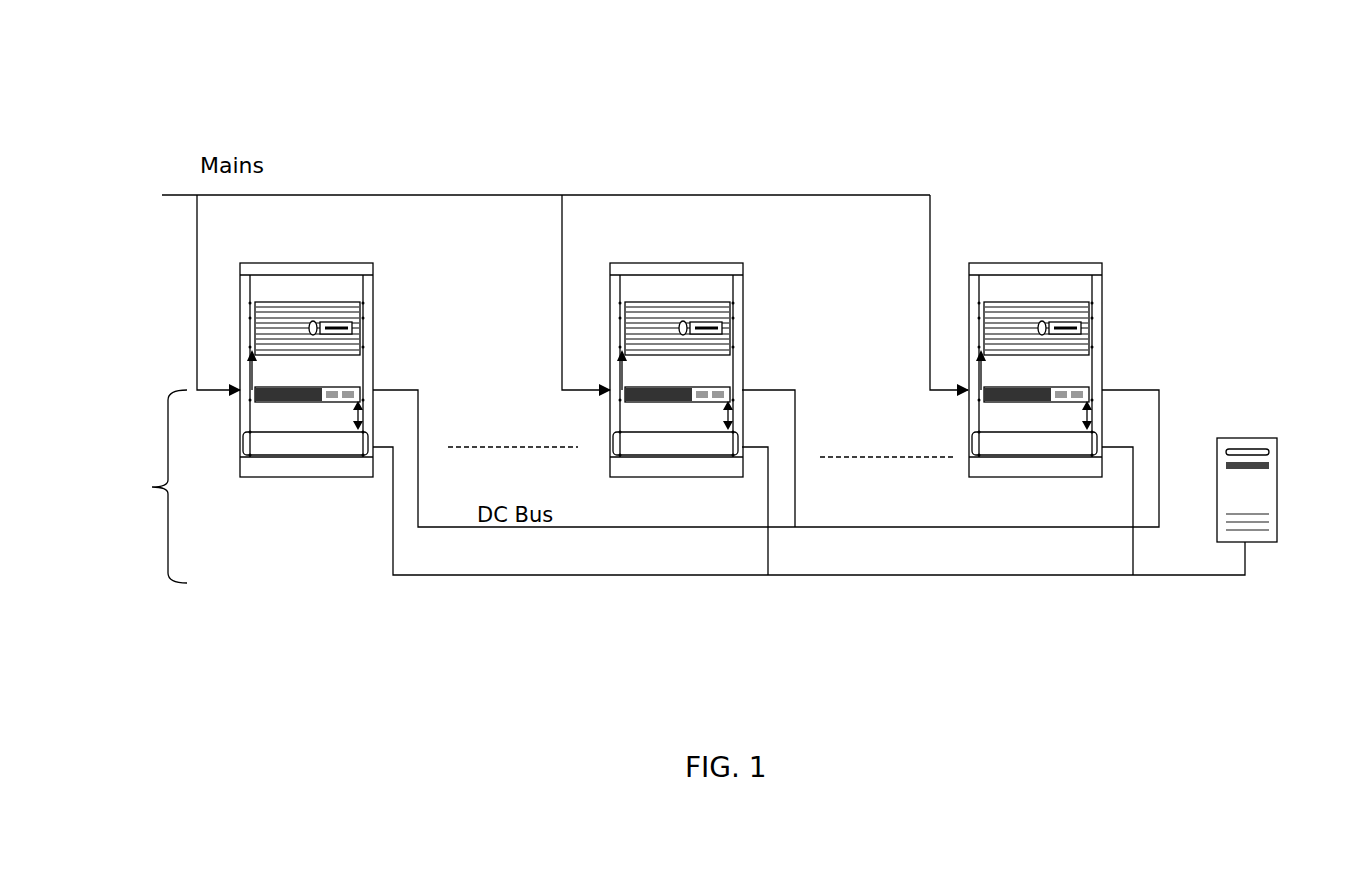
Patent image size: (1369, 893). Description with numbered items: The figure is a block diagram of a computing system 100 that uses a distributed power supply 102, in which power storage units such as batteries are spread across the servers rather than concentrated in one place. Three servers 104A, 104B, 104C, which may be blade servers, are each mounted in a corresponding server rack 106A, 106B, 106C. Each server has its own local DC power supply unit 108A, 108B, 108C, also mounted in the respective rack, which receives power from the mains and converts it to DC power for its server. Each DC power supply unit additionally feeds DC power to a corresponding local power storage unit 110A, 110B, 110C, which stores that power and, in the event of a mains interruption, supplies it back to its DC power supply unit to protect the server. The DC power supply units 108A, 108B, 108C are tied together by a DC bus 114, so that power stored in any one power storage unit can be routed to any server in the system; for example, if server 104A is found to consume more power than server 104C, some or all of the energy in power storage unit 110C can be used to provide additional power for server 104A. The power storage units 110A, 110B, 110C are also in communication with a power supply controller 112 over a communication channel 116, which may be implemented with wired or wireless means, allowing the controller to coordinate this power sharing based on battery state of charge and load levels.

The computing system 100 is at (823, 118).
The distributed power supply 102 is at (152, 487).
The server 104A is at (360, 335).
The server 104B is at (730, 335).
The server 104C is at (1089, 335).
The server rack 106A is at (372, 275).
The server rack 106B is at (742, 275).
The server rack 106C is at (1101, 275).
The DC power supply unit 108A is at (362, 395).
The DC power supply unit 108B is at (732, 395).
The DC power supply unit 108C is at (1091, 395).
The power storage unit 110A is at (365, 440).
The power storage unit 110B is at (735, 440).
The power storage unit 110C is at (1094, 440).
The power supply controller 112 is at (1246, 458).
The DC bus 114 is at (977, 527).
The communication channel 116 is at (583, 575).